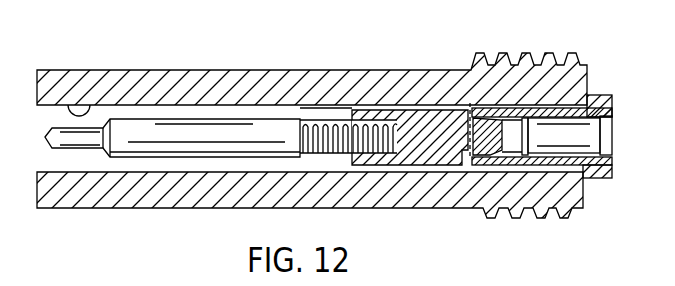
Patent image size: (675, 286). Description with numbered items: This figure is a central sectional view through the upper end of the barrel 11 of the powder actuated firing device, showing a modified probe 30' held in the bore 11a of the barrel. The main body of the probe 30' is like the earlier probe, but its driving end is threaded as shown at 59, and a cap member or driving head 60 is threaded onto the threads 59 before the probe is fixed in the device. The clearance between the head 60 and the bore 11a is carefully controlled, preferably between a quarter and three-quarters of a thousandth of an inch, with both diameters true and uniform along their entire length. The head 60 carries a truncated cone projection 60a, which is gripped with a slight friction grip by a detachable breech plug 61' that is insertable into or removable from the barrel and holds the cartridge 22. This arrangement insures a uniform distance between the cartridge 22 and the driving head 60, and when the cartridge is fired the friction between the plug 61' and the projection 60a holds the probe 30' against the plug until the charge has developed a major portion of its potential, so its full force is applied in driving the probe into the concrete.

The barrel 11 is at (213, 76).
The bore of the barrel 11a is at (88, 105).
The probe 30' is at (172, 92).
The threads 59 is at (318, 122).
The driving head 60 is at (412, 116).
The truncated cone projection 60a is at (472, 132).
The cartridge 22 is at (562, 132).
The detachable breech plug 61' is at (620, 133).